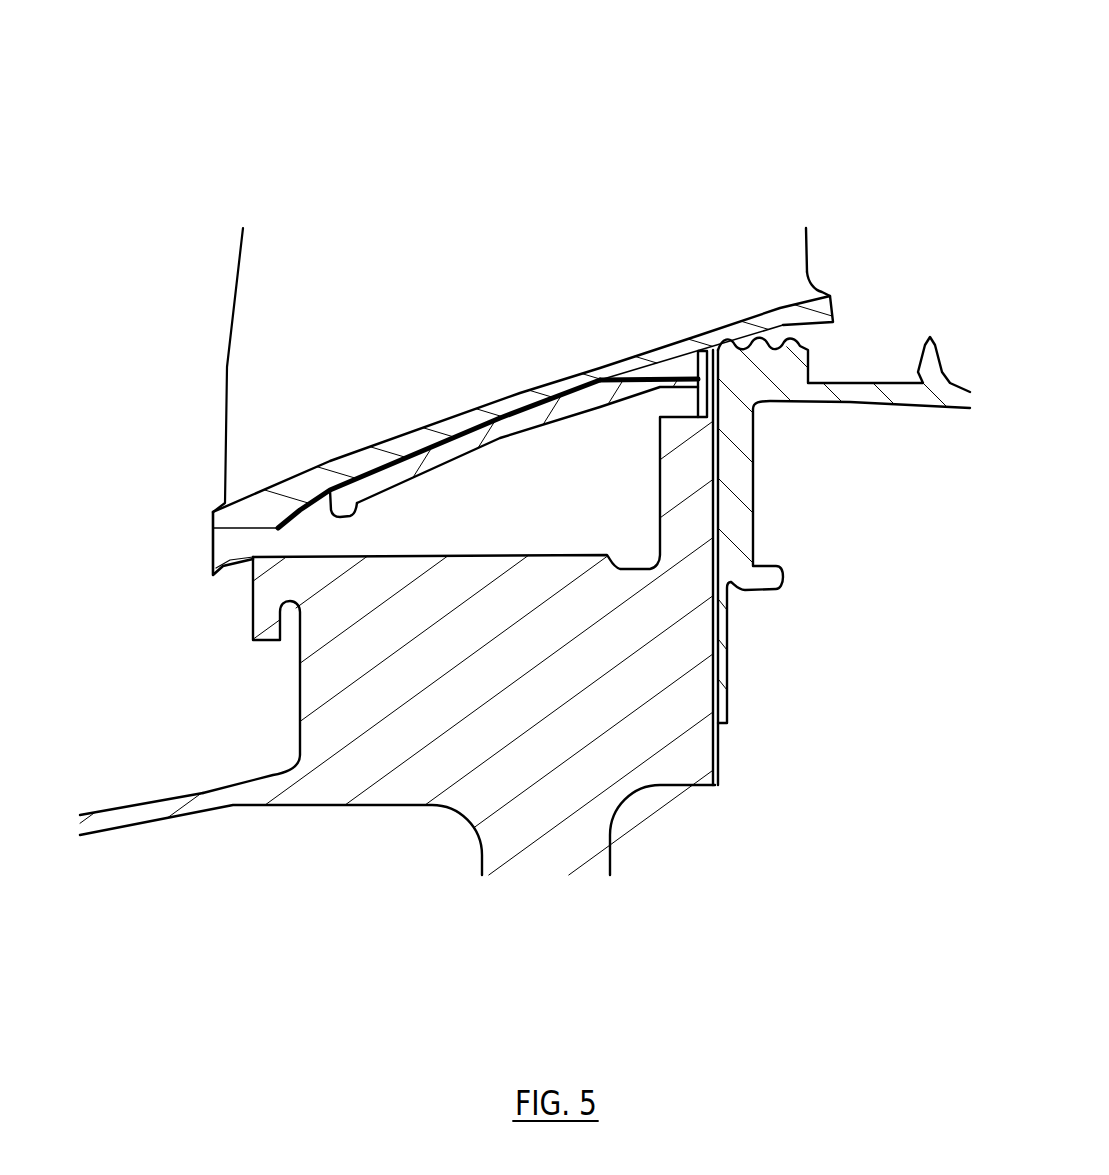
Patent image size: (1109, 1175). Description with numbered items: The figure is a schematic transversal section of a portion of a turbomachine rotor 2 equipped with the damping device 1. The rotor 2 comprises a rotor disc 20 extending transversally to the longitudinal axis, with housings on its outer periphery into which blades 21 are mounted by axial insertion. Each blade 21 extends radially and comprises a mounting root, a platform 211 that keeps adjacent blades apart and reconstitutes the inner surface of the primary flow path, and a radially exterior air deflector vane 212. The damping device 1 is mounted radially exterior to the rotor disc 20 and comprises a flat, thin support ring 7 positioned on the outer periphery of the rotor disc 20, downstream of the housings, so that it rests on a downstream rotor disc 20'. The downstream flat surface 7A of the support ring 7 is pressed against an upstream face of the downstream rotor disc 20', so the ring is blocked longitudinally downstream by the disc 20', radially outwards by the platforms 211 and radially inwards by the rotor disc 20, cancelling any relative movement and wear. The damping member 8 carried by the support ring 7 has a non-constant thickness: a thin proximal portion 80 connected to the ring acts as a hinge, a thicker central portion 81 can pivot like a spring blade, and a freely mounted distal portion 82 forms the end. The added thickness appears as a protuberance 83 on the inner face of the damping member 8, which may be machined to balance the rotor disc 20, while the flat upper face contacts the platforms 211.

The damping device 1 is at (536, 384).
The rotor 2 is at (272, 813).
The support ring 7 is at (745, 360).
The downstream flat surface 7A is at (730, 386).
The damping member 8 is at (492, 463).
The rotor disc 20 is at (397, 680).
The downstream rotor disc 20' is at (787, 623).
The blade 21 is at (466, 126).
The proximal portion 80 is at (645, 365).
The central portion 81 is at (470, 420).
The distal portion 82 is at (363, 460).
The protuberance 83 is at (359, 511).
The platform 211 is at (836, 305).
The air deflector vane 212 is at (750, 233).